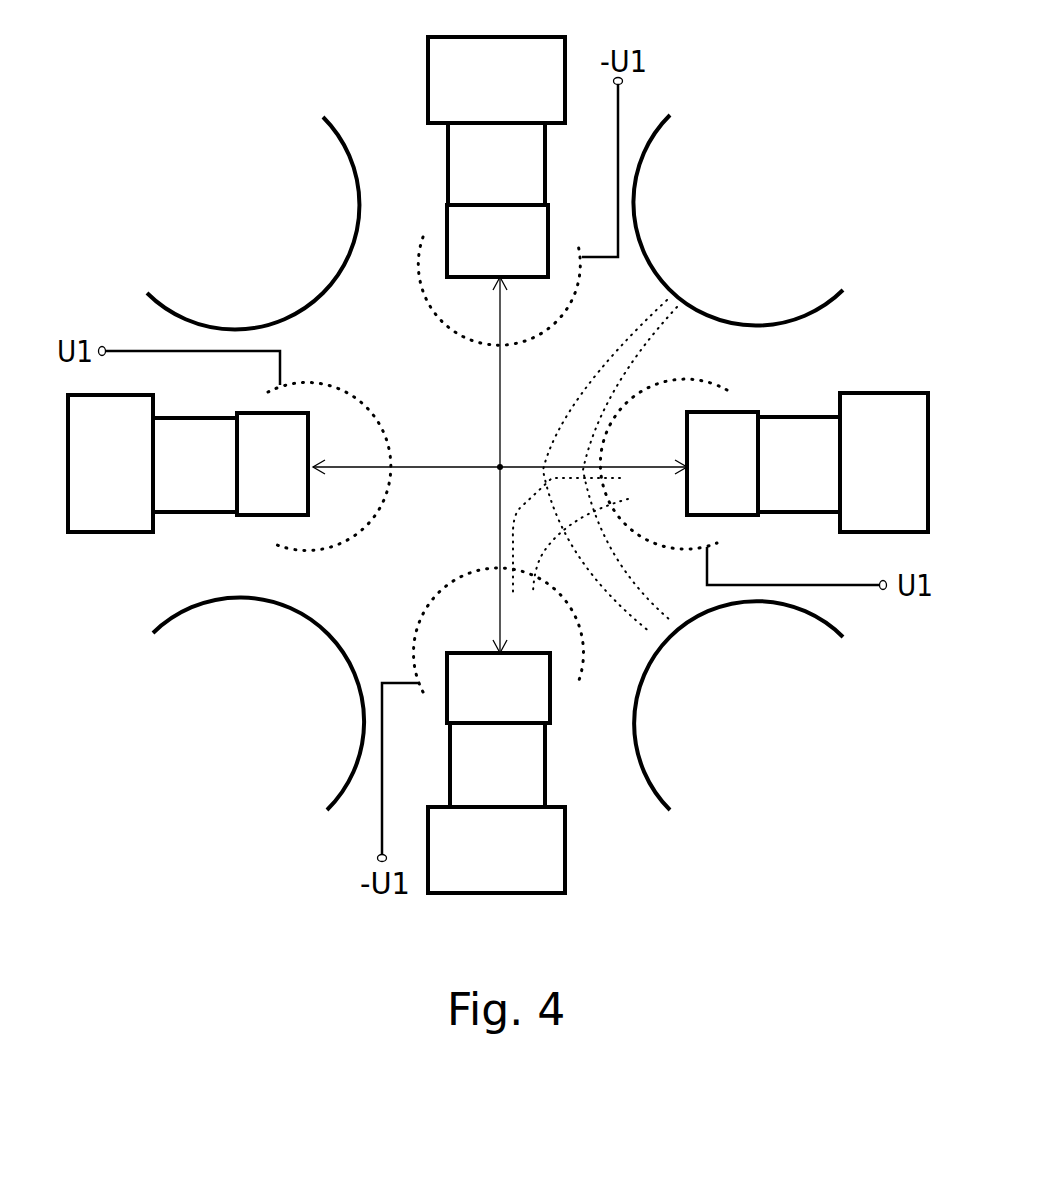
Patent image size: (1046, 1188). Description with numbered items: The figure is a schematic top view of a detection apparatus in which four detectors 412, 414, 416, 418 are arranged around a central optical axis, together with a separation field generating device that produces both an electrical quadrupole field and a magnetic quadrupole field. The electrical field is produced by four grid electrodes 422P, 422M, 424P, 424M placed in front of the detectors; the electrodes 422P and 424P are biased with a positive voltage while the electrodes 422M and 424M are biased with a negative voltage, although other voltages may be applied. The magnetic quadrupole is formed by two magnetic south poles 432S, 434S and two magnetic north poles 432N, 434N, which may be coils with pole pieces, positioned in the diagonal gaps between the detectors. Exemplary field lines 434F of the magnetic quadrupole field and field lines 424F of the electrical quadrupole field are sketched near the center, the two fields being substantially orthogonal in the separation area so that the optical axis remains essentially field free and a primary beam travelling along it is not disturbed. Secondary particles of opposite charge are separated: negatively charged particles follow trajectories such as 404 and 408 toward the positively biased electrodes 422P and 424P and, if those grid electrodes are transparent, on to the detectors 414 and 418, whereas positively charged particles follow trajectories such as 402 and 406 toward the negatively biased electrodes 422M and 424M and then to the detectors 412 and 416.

The trajectory of positively charged particles 402 is at (547, 316).
The trajectory of negatively charged particles 404 is at (332, 460).
The trajectory of positively charged particles 406 is at (497, 623).
The trajectory of negatively charged particles 408 is at (657, 470).
The detector 412 is at (416, 73).
The detector 414 is at (95, 540).
The detector 416 is at (568, 873).
The detector 418 is at (887, 392).
The electrode 422M is at (415, 293).
The electrode 422P is at (290, 548).
The electrode 424M is at (413, 647).
The electrode 424P is at (717, 383).
The field lines of the electrical quadrupole field 424F is at (550, 547).
The magnetic north pole 432N is at (150, 293).
The magnetic south pole 432S is at (165, 630).
The magnetic north pole 434N is at (843, 637).
The magnetic south pole 434S is at (843, 290).
The field lines of the magnetic quadrupole field 434F is at (577, 460).